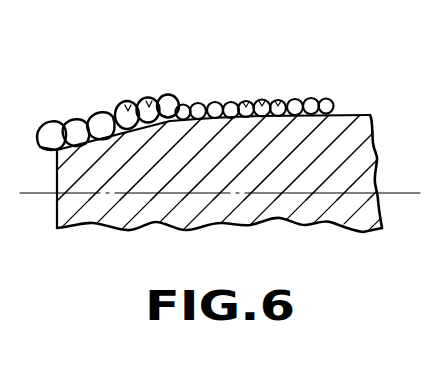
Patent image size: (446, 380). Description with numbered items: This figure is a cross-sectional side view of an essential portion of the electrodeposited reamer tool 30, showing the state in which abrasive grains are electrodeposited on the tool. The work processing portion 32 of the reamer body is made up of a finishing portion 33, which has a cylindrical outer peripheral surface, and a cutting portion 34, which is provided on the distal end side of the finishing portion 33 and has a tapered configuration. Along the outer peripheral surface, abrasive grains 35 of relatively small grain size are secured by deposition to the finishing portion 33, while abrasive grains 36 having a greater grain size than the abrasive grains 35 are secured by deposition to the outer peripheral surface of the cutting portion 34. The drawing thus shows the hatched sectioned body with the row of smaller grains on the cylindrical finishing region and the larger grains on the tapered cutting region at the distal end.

The electrodeposited reamer tool 30 is at (386, 137).
The work processing portion 32 is at (197, 84).
The finishing portion 33 is at (345, 115).
The cutting portion 34 is at (85, 112).
The abrasive grains 35 is at (293, 80).
The abrasive grains 36 is at (127, 117).